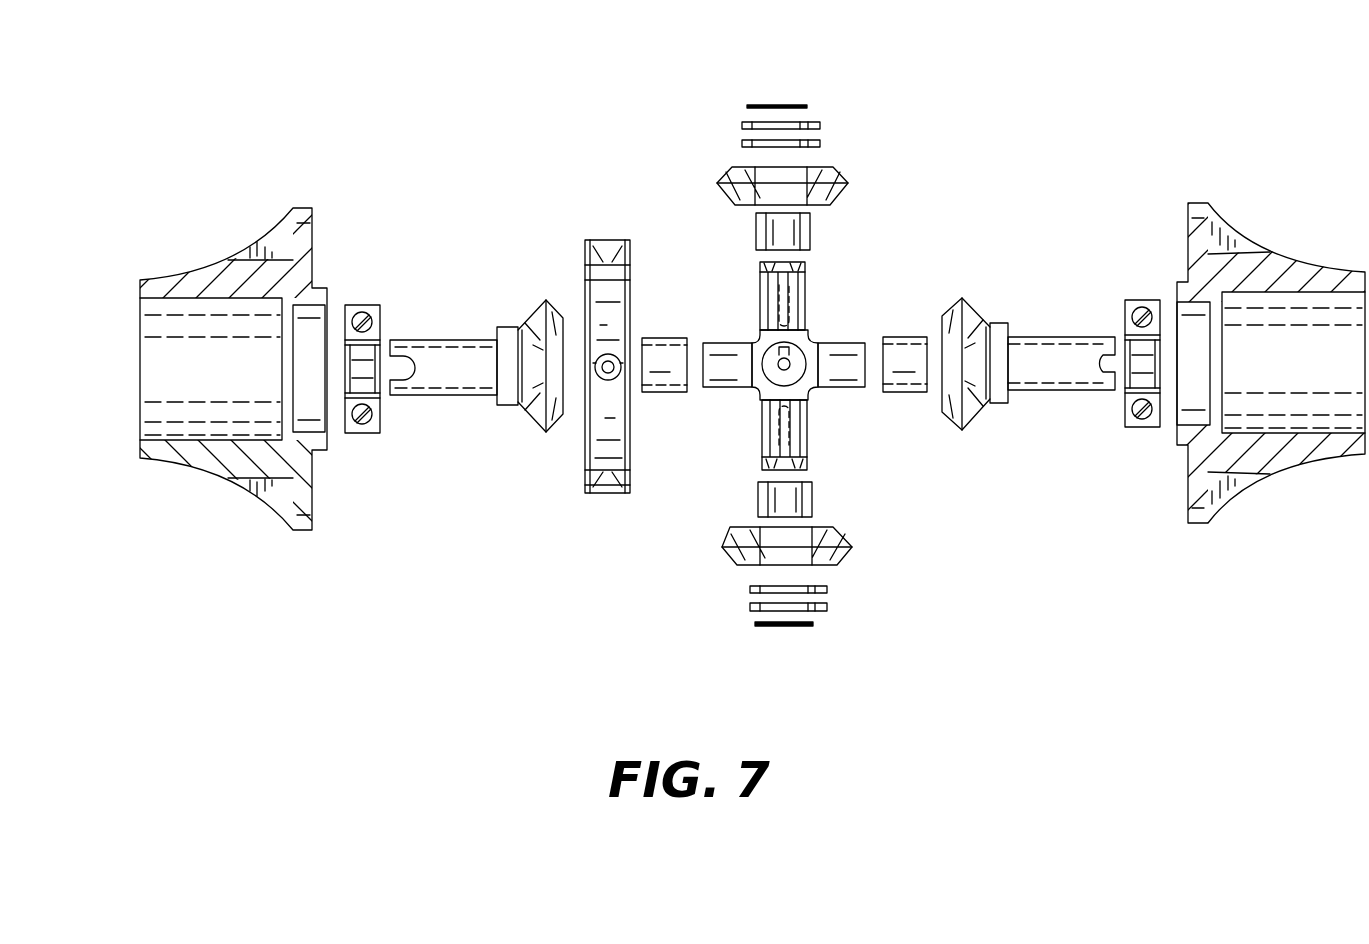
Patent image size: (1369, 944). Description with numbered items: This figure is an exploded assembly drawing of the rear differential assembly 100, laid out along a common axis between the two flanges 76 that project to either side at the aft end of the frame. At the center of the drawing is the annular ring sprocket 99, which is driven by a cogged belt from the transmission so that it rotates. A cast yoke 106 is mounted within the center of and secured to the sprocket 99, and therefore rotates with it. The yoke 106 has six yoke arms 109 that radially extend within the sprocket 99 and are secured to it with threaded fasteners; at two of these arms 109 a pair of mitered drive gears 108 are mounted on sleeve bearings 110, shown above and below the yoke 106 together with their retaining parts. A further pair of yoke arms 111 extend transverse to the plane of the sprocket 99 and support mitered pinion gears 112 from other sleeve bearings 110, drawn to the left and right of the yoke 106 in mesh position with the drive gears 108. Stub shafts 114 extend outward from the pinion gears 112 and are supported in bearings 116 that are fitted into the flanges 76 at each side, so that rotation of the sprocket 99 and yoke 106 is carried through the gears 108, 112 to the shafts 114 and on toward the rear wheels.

The flange 76 is at (178, 280).
The annular ring sprocket 99 is at (607, 240).
The rear differential assembly 100 is at (1021, 137).
The cast yoke 106 is at (803, 396).
The mitered drive gear 108 is at (728, 178).
The yoke arm 109 is at (760, 295).
The sleeve bearing 110 is at (650, 338).
The yoke arm 111 is at (836, 342).
The mitered pinion gear 112 is at (537, 307).
The stub shaft 114 is at (440, 398).
The bearing 116 is at (352, 305).